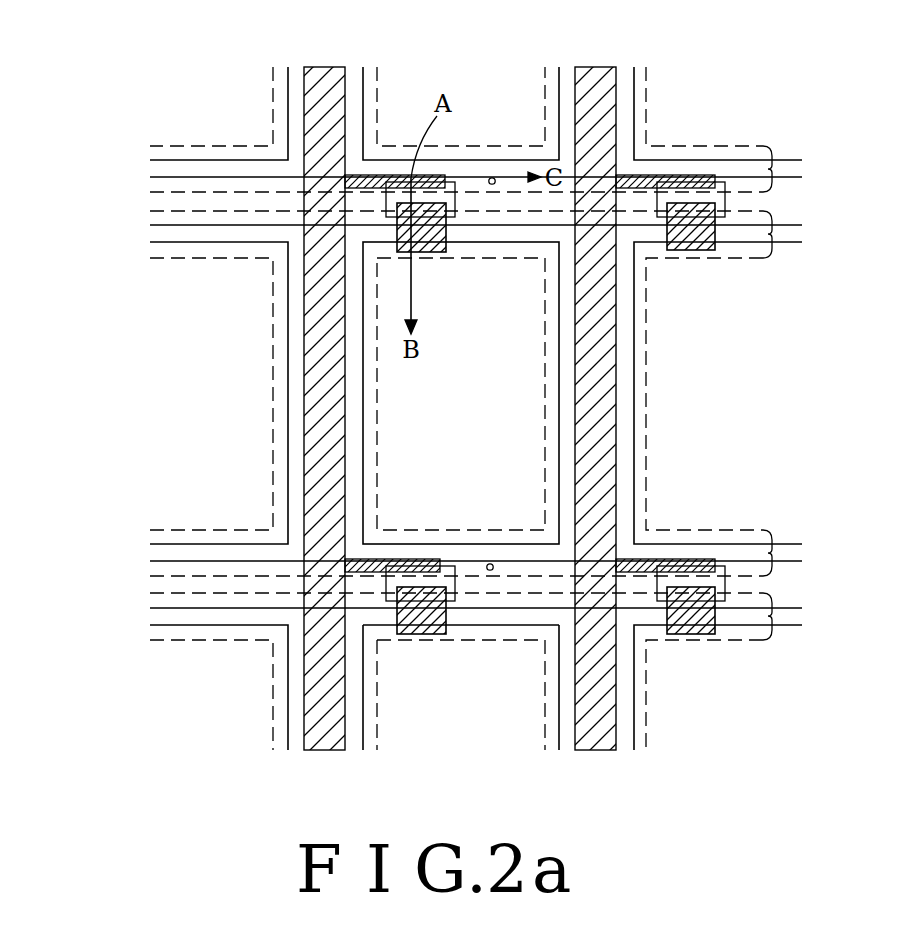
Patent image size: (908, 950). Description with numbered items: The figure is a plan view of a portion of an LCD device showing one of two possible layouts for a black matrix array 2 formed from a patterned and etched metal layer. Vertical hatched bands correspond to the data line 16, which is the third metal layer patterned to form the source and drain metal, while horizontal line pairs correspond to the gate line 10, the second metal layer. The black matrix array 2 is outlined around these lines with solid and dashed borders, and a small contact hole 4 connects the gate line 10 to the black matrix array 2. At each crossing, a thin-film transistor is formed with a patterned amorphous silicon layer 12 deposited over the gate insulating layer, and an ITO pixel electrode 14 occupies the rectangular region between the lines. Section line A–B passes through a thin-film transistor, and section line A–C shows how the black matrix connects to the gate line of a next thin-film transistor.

The black matrix pattern 2 is at (273, 68).
The contact hole 4 is at (493, 177).
The gate line 10 is at (806, 177).
The amorphous silicon layer 12 is at (455, 198).
The ITO pixel electrode 14 is at (556, 470).
The data line 16 is at (312, 106).